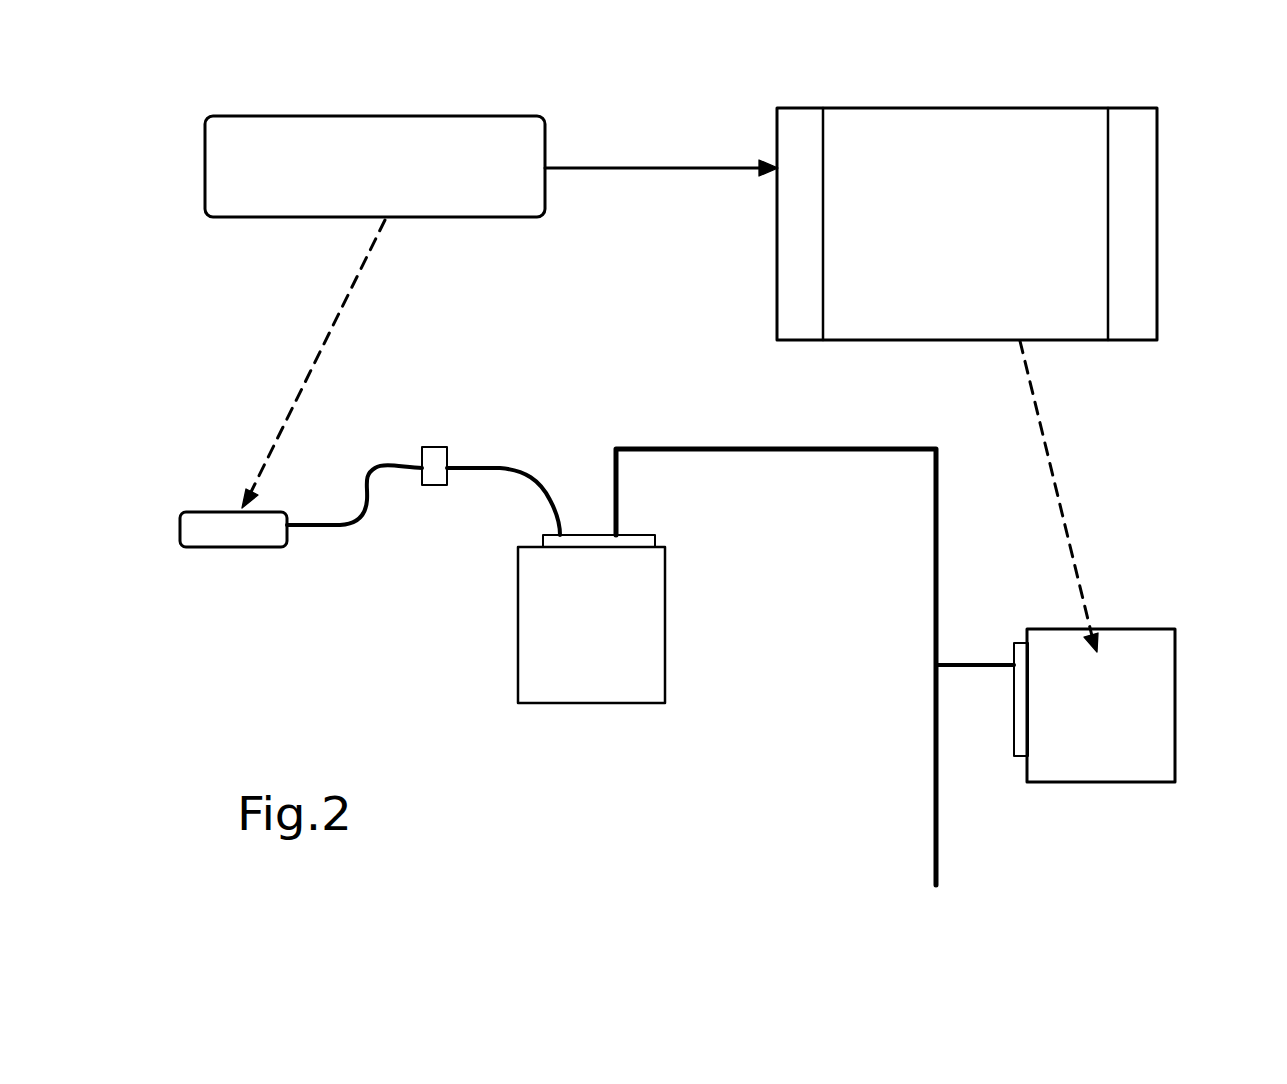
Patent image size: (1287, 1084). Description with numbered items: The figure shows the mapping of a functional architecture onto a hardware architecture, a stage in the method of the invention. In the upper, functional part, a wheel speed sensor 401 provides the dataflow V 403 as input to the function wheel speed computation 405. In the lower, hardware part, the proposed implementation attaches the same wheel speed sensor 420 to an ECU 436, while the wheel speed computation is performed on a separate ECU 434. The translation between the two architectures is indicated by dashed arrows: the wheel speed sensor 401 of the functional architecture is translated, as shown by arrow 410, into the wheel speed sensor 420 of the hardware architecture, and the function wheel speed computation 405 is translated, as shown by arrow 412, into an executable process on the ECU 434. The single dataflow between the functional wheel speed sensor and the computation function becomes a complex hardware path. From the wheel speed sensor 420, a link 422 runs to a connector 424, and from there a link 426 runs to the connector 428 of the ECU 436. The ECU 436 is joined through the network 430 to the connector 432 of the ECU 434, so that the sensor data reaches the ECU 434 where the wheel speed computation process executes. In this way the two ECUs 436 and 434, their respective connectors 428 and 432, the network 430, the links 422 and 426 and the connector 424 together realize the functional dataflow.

The wheel speed sensor 401 is at (370, 118).
The dataflow V 403 is at (602, 168).
The function wheel speed computation 405 is at (942, 130).
The arrow 410 is at (327, 337).
The arrow 412 is at (1055, 475).
The wheel speed sensor 420 is at (265, 548).
The link 422 is at (368, 522).
The connector 424 is at (438, 460).
The link 426 is at (535, 472).
The connector 428 is at (645, 545).
The network 430 is at (795, 448).
The connector 432 is at (1027, 658).
The ECU 434 is at (1148, 716).
The ECU 436 is at (553, 667).